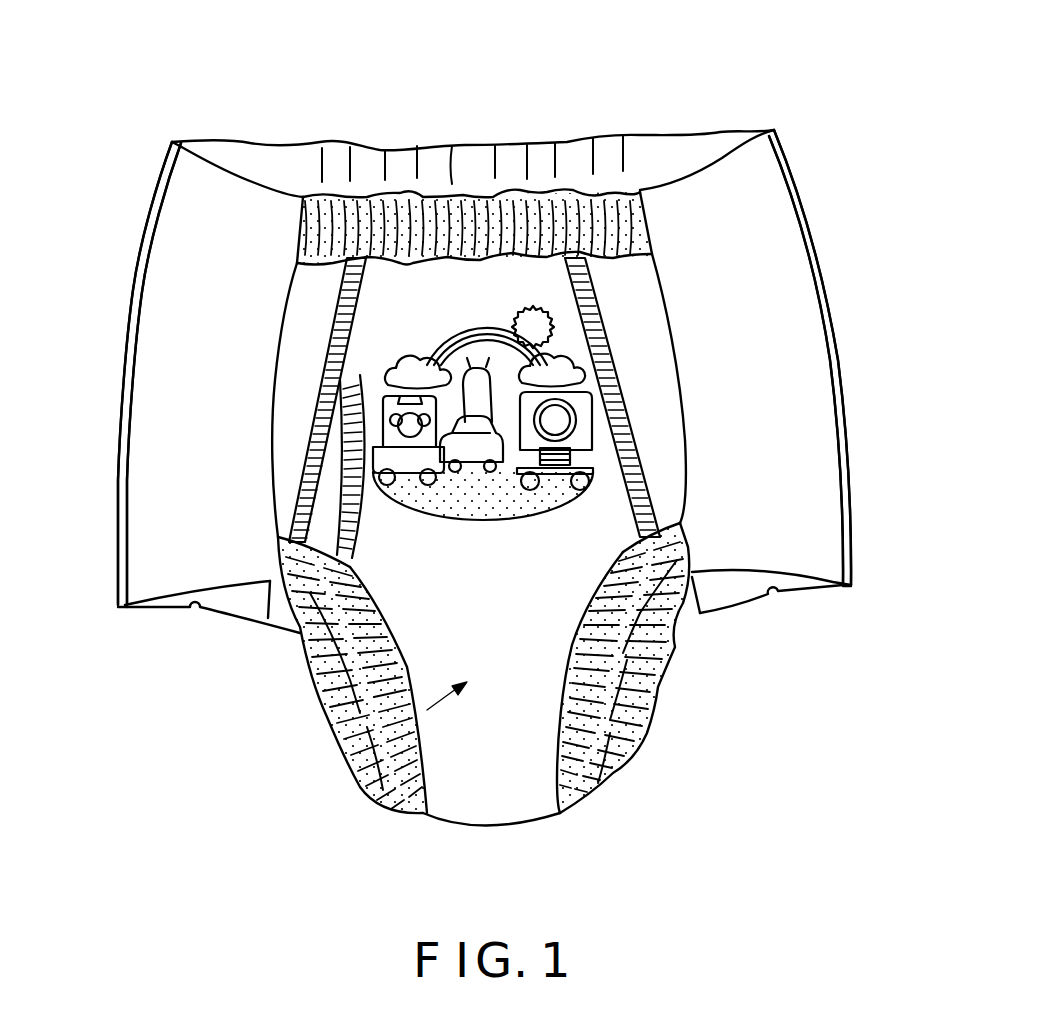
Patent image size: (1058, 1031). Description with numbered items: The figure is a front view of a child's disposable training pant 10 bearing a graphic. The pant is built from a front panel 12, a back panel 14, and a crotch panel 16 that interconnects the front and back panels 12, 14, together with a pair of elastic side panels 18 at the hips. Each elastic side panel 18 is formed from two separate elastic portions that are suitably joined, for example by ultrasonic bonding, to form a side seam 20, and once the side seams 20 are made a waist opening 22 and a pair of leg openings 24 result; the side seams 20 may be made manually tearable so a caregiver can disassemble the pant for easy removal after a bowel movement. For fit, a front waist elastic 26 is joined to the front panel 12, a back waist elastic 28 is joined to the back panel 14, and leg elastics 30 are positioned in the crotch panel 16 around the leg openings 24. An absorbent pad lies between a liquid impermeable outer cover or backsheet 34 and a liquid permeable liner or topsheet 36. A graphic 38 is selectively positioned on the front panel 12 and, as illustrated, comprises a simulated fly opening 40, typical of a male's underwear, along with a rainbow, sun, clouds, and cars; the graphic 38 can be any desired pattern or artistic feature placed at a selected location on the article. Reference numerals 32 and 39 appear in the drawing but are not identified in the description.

The disposable training pant 10 is at (663, 57).
The front panel 12 is at (317, 328).
The back panel 14 is at (293, 153).
The crotch panel 16 is at (451, 848).
The elastic side panels 18 is at (782, 317).
The side seam 20 is at (833, 358).
The waist opening 22 is at (710, 137).
The leg openings 24 is at (197, 607).
The front waist elastic 26 is at (636, 220).
The back waist elastic 28 is at (442, 165).
The leg elastics 30 is at (360, 777).
The leg elastic fold line 32 is at (333, 740).
The outer cover or backsheet 34 is at (677, 473).
The liner or topsheet 36 is at (481, 168).
The graphic 38 is at (622, 327).
The graphic 39 is at (598, 521).
The simulated fly opening 40 is at (300, 477).